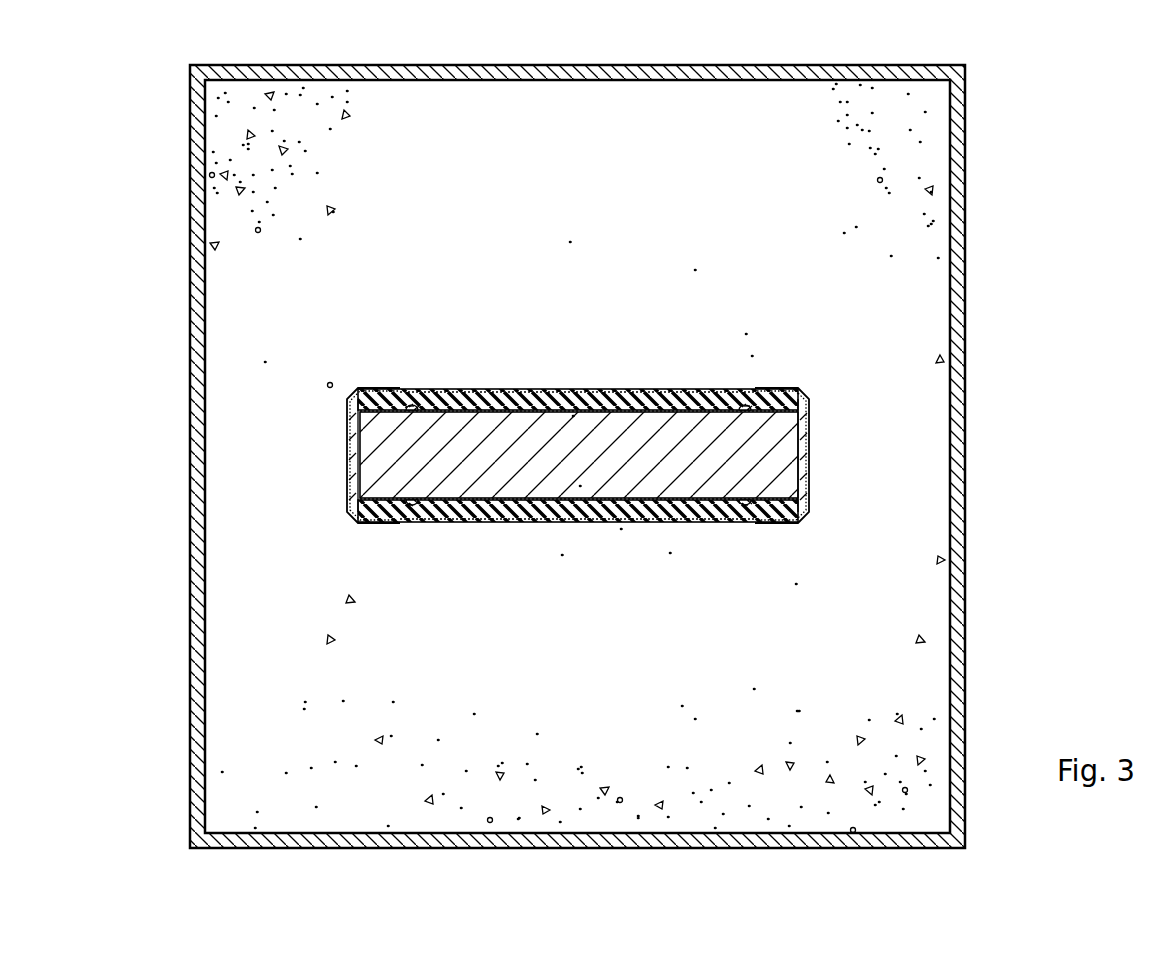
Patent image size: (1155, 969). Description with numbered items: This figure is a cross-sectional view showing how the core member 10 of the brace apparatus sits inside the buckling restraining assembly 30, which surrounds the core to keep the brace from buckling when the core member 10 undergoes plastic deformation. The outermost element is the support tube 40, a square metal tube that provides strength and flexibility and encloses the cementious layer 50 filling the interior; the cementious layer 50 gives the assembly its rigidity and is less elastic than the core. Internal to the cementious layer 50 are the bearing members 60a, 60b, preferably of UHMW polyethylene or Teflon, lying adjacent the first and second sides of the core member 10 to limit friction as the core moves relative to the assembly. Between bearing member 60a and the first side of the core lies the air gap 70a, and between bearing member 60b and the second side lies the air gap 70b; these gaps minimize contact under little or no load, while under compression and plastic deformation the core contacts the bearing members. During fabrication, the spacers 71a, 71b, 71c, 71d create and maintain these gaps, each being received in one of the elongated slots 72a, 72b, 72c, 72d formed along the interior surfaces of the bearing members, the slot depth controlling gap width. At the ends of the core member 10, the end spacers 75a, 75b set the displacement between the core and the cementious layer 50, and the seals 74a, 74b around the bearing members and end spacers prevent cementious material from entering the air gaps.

The core member 10 is at (809, 418).
The buckling restraining assembly 30 is at (1003, 168).
The support tube 40 is at (318, 65).
The cementious layer 50 is at (288, 226).
The bearing member 60a is at (358, 391).
The bearing member 60b is at (351, 507).
The air gap 70a is at (600, 404).
The air gap 70b is at (485, 523).
The spacer 71a is at (411, 406).
The spacer 71b is at (748, 407).
The spacer 71c is at (409, 522).
The spacer 71d is at (745, 523).
The elongated slot 72a is at (413, 408).
The elongated slot 72b is at (745, 408).
The elongated slot 72c is at (424, 522).
The elongated slot 72d is at (742, 504).
The seal 74a is at (352, 470).
The seal 74b is at (808, 397).
The end spacer 75a is at (351, 442).
The end spacer 75b is at (807, 454).